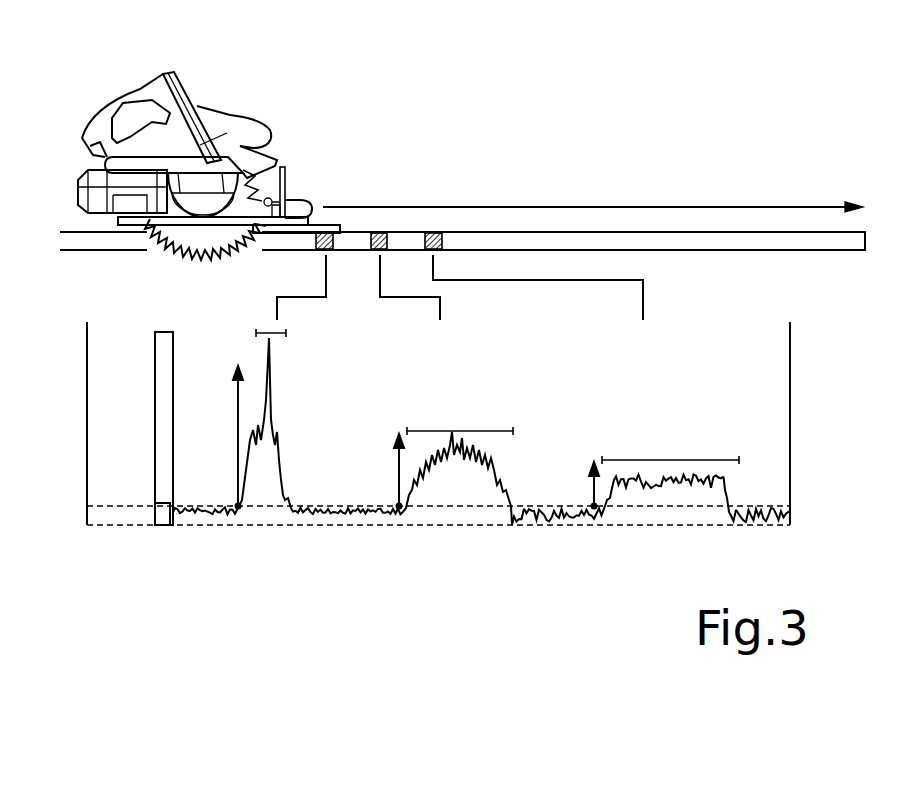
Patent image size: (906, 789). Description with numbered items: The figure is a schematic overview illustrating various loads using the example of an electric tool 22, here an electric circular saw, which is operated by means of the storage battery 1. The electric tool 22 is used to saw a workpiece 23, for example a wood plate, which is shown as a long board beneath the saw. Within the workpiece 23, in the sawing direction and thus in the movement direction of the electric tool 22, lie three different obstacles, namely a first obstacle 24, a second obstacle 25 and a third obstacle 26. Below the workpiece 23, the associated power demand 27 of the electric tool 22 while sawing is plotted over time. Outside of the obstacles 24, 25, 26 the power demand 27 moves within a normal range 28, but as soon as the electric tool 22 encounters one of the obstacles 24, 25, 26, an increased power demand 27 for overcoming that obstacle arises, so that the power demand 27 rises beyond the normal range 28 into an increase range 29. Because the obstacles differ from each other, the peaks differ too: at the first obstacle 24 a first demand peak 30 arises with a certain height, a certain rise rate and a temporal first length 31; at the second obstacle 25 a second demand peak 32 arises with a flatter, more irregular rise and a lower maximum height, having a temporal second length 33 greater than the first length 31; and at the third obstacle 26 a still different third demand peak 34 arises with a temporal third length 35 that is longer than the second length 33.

The storage battery 1 is at (177, 138).
The electric tool 22 is at (130, 98).
The workpiece 23 is at (717, 245).
The first obstacle 24 is at (327, 232).
The second obstacle 25 is at (381, 232).
The third obstacle 26 is at (434, 232).
The power demand 27 is at (200, 510).
The normal range 28 is at (158, 520).
The increase range 29 is at (155, 375).
The first demand peak 30 is at (272, 400).
The first length 31 is at (262, 330).
The second demand peak 32 is at (492, 490).
The second length 33 is at (440, 431).
The third demand peak 34 is at (728, 500).
The third length 35 is at (660, 460).